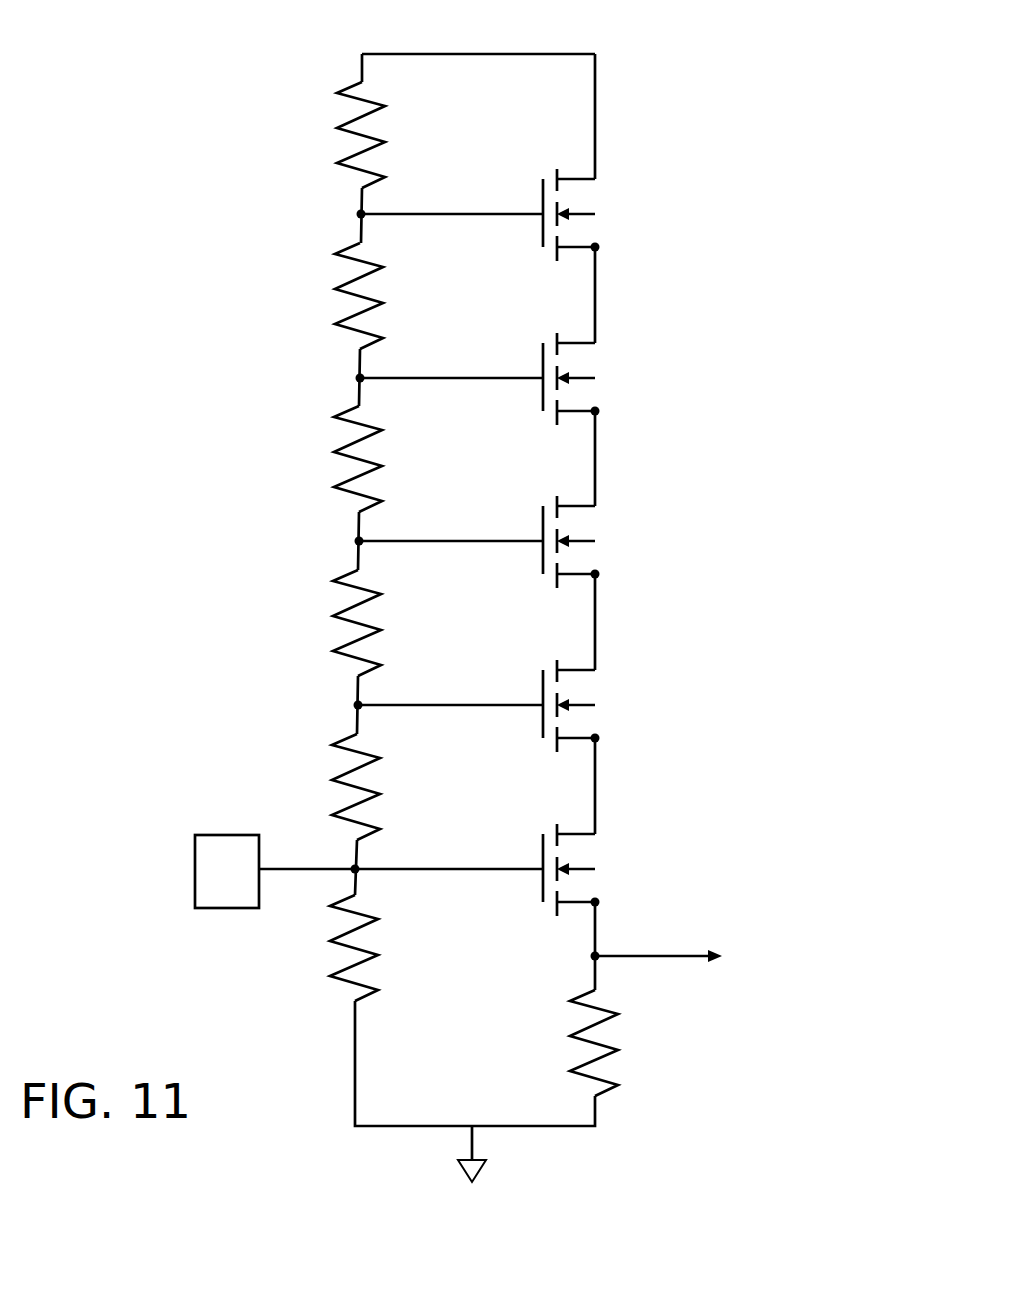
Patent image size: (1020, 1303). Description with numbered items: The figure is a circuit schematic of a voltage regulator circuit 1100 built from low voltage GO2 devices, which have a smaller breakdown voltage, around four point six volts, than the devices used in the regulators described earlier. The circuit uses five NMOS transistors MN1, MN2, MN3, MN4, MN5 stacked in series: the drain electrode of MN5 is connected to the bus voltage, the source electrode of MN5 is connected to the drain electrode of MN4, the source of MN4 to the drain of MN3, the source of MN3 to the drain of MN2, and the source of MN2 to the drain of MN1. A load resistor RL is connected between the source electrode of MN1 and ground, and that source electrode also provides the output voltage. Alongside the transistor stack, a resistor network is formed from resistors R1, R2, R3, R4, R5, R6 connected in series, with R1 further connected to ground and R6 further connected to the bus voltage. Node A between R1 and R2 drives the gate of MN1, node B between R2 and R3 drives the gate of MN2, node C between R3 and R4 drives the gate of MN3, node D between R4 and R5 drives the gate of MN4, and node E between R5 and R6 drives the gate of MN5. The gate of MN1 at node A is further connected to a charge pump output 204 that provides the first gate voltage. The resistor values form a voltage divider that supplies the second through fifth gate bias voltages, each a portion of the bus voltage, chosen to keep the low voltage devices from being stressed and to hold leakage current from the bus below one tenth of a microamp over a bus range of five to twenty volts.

The voltage regulator circuit 1100 is at (178, 126).
The charge pump output 204 is at (227, 871).
The resistor R1 is at (334, 948).
The resistor R2 is at (335, 787).
The resistor R3 is at (335, 623).
The resistor R4 is at (336, 459).
The resistor R5 is at (336, 296).
The resistor R6 is at (337, 135).
The load resistor RL is at (618, 1043).
The NMOS transistor MN1 is at (607, 870).
The NMOS transistor MN2 is at (607, 706).
The NMOS transistor MN3 is at (607, 542).
The NMOS transistor MN4 is at (607, 379).
The NMOS transistor MN5 is at (607, 215).